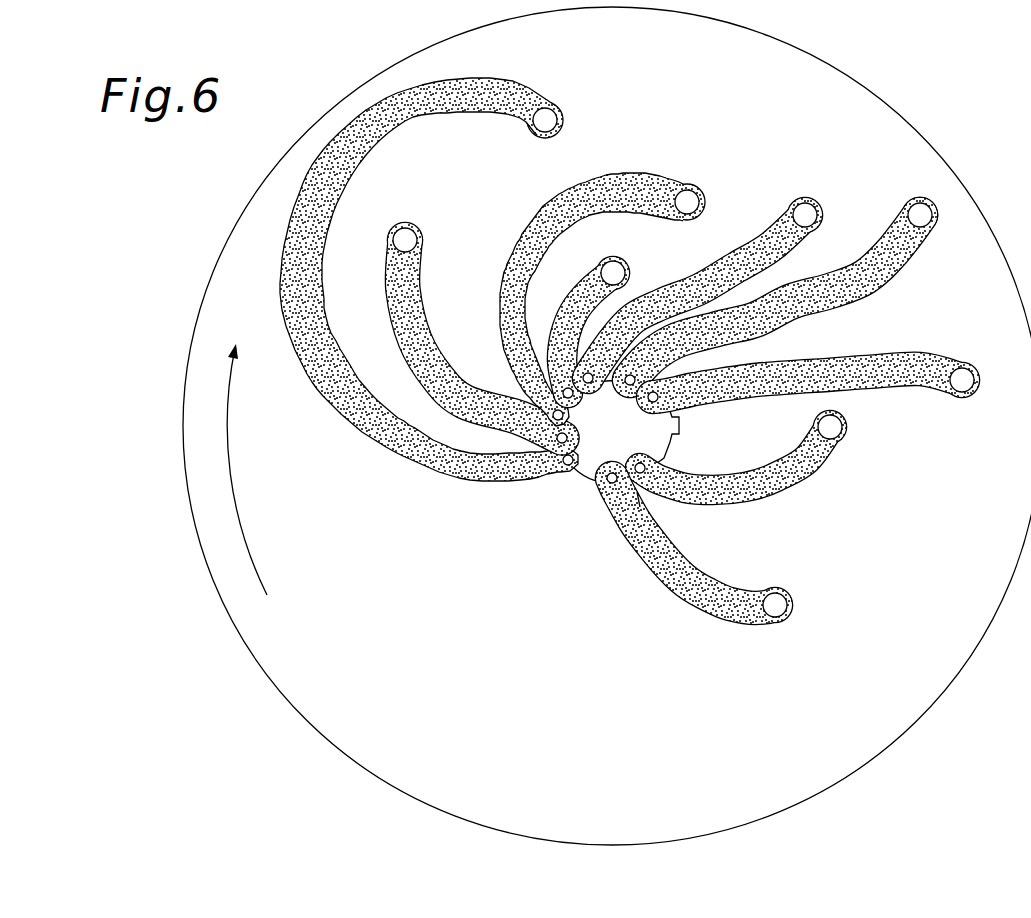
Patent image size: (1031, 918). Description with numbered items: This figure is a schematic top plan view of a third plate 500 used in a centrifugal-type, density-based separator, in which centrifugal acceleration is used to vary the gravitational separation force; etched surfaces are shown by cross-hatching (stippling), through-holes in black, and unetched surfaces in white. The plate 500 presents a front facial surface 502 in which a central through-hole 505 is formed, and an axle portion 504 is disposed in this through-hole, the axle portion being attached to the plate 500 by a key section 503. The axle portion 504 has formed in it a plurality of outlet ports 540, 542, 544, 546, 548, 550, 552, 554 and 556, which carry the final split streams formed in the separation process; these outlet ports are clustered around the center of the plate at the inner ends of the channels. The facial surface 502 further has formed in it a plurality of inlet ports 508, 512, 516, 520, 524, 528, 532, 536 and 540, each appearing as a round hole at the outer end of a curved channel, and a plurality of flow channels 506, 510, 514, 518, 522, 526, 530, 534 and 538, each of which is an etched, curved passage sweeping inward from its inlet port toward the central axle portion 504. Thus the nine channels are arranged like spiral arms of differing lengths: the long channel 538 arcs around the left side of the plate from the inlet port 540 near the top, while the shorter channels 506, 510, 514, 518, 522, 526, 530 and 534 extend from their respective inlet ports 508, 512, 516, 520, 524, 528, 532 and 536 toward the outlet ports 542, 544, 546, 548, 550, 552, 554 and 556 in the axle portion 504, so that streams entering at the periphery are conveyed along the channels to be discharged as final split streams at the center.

The third plate 500 is at (928, 88).
The front facial surface 502 is at (961, 521).
The key section 503 is at (680, 427).
The axle portion 504 is at (587, 470).
The central through-hole 505 is at (640, 507).
The flow channel 506 is at (665, 583).
The inlet port 508 is at (786, 603).
The flow channel 510 is at (760, 488).
The inlet port 512 is at (843, 426).
The flow channel 514 is at (787, 362).
The inlet port 516 is at (962, 370).
The flow channel 518 is at (867, 288).
The inlet port 520 is at (927, 218).
The flow channel 522 is at (777, 259).
The inlet port 524 is at (817, 213).
The flow channel 526 is at (577, 282).
The inlet port 528 is at (618, 275).
The flow channel 530 is at (620, 174).
The inlet port 532 is at (692, 198).
The flow channel 534 is at (420, 284).
The inlet port 536 is at (410, 238).
The flow channel 538 is at (500, 80).
The outlet port / inlet port 540 is at (550, 115).
The outlet port 542 is at (607, 488).
The outlet port 544 is at (567, 468).
The outlet port 546 is at (553, 443).
The outlet port 548 is at (552, 402).
The outlet port 550 is at (553, 388).
The outlet port 552 is at (592, 373).
The outlet port 554 is at (640, 373).
The outlet port 556 is at (670, 407).